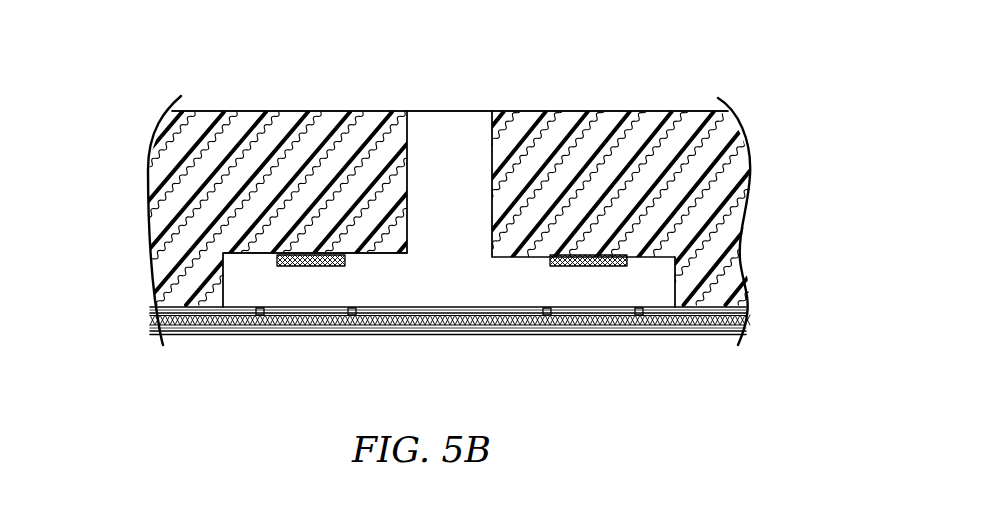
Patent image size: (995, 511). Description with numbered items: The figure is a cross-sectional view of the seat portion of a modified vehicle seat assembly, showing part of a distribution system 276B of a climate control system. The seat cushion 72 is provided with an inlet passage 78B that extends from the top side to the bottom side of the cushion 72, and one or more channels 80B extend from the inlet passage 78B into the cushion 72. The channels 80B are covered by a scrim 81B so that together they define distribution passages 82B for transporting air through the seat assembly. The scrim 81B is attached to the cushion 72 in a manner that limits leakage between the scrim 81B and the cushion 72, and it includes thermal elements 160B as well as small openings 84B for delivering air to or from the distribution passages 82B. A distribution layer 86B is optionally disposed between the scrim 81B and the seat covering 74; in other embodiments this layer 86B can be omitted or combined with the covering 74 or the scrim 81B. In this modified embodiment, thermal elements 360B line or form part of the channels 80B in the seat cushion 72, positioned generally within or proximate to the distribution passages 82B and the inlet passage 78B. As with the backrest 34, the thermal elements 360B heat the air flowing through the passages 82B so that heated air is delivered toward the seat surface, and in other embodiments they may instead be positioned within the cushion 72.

The backrest 34 is at (283, 68).
The distribution system 276B is at (175, 71).
The inlet passage 78B is at (497, 151).
The seat cushion 72 is at (637, 136).
The thermal elements 160B is at (642, 210).
The channels 80B is at (672, 254).
The thermal elements 360B is at (294, 254).
The distribution passages 82B is at (338, 296).
The openings 84B is at (263, 335).
The distribution layer 86B is at (407, 335).
The scrim 81B is at (500, 335).
The seat covering 74 is at (717, 336).